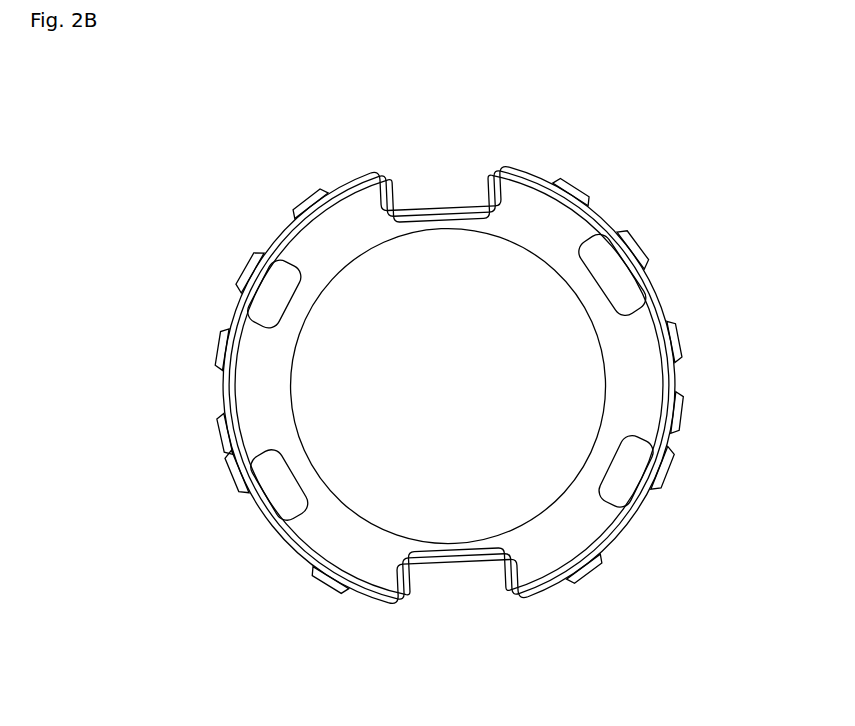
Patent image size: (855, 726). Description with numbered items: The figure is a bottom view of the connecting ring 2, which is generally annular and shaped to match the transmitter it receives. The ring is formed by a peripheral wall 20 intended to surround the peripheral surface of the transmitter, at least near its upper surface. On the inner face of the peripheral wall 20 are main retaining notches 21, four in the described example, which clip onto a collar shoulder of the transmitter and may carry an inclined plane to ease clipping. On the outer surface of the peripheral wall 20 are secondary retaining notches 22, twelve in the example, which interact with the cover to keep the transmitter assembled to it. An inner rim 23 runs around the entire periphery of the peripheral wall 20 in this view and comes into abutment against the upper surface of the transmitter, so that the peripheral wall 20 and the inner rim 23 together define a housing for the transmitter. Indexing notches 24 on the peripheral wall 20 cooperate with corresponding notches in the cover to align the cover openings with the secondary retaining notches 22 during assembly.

The connecting ring 2 is at (220, 191).
The peripheral wall 20 is at (236, 474).
The main retaining notch 21 is at (294, 288).
The secondary retaining notch 22 is at (323, 582).
The inner rim 23 is at (250, 400).
The indexing notch 24 is at (440, 186).